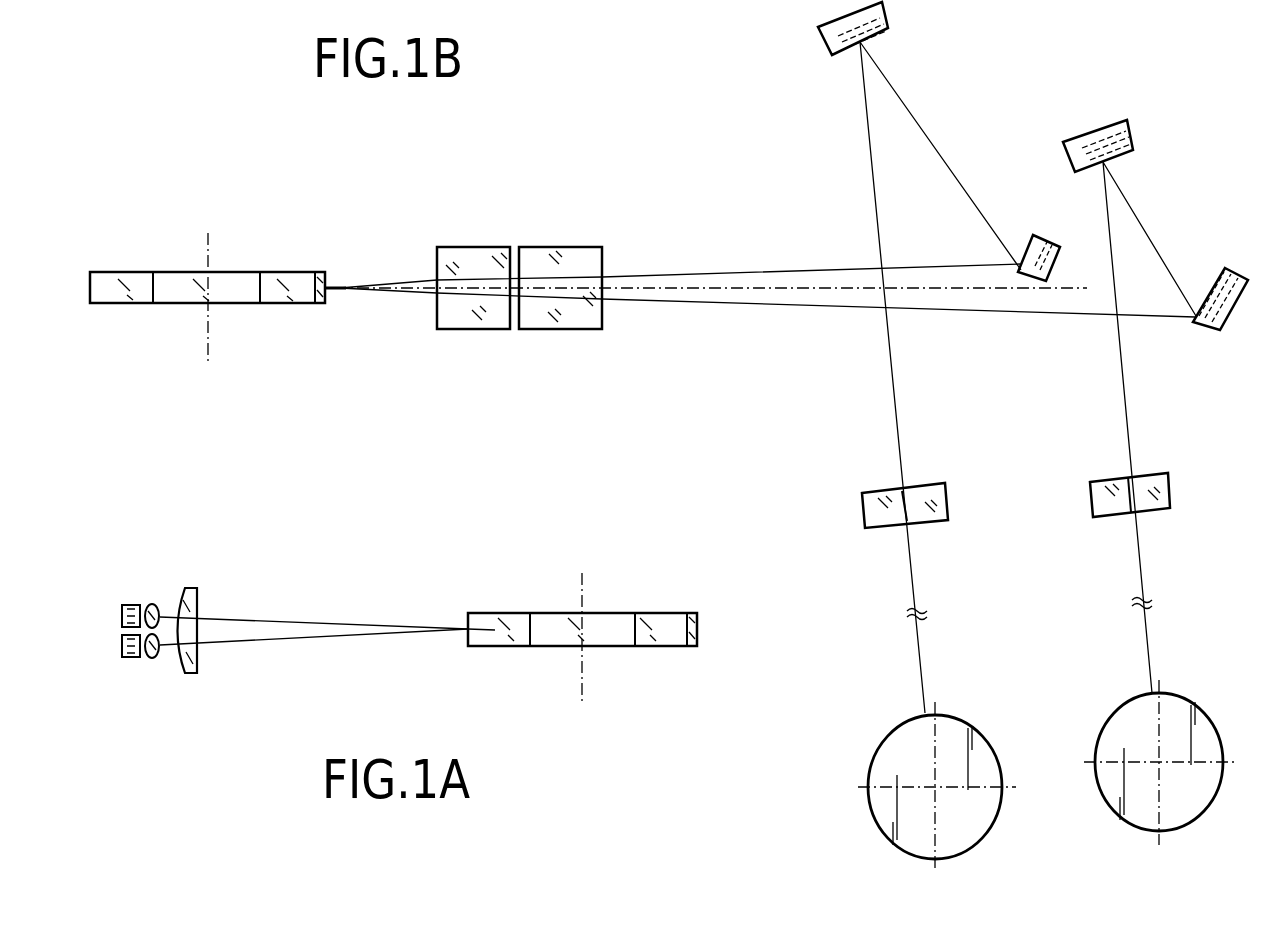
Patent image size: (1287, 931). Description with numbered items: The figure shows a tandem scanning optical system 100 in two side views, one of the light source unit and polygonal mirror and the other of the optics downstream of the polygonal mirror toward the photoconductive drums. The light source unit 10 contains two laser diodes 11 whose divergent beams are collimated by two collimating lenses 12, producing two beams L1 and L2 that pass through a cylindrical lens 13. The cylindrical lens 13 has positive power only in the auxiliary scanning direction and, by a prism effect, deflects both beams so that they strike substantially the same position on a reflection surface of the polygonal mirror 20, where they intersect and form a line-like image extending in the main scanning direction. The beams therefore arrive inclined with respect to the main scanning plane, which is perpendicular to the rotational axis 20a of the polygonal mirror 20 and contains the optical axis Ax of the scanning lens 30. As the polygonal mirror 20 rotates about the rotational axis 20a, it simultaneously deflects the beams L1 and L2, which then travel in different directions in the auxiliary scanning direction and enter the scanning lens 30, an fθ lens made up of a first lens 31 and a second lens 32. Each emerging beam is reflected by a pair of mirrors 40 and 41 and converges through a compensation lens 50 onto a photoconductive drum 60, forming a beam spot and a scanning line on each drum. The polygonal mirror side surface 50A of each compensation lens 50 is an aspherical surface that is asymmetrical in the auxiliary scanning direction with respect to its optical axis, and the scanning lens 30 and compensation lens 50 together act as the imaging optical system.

In FIG. 1B, the scanning optical system 100 is at (165, 162).
In FIG. 1A, the light source unit 10 is at (164, 644).
In FIG. 1A, the laser diode 11 is at (122, 613).
In FIG. 1A, the collimating lens 12 is at (150, 606).
In FIG. 1A, the cylindrical lens 13 is at (198, 603).
In FIG. 1A, the polygonal mirror 20 is at (495, 648).
In FIG. 1B, the polygonal mirror 20 is at (125, 305).
In FIG. 1A, the rotational axis 20a is at (583, 677).
In FIG. 1B, the rotational axis 20a is at (208, 337).
In FIG. 1B, the scanning lens 30 is at (519, 340).
In FIG. 1B, the first lens 31 is at (473, 331).
In FIG. 1B, the second lens 32 is at (560, 317).
In FIG. 1B, the mirror 40 is at (1045, 244).
In FIG. 1B, the mirror 41 is at (835, 37).
In FIG. 1B, the compensation lens 50 is at (1001, 473).
In FIG. 1B, the polygonal mirror side surface 50A is at (925, 483).
In FIG. 1B, the photoconductive drum 60 is at (898, 740).
In FIG. 1A, the beam L1 is at (335, 621).
In FIG. 1B, the beam L1 is at (735, 303).
In FIG. 1A, the beam L2 is at (333, 639).
In FIG. 1B, the beam L2 is at (737, 275).
In FIG. 1B, the optical axis Ax is at (808, 289).